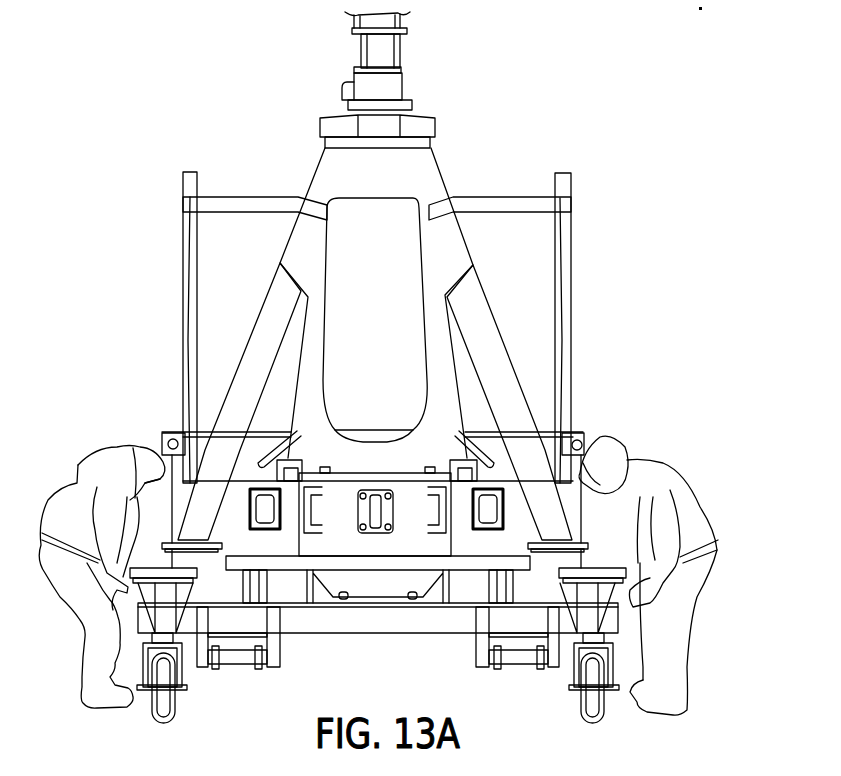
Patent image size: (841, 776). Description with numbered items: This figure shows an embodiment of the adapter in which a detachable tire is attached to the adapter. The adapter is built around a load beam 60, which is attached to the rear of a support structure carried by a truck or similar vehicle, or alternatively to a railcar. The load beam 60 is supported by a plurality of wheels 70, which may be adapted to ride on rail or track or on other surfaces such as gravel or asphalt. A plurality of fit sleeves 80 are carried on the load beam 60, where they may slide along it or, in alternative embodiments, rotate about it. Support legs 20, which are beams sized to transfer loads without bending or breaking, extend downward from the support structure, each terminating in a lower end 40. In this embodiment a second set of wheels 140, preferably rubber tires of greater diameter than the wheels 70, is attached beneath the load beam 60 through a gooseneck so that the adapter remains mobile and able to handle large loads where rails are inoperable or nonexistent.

The support legs 20 is at (261, 376).
The lower end 40 is at (190, 531).
The load beam 60 is at (343, 622).
The wheels 70 is at (247, 660).
The fit sleeves 80 is at (597, 577).
The second set of wheels 140 is at (167, 707).